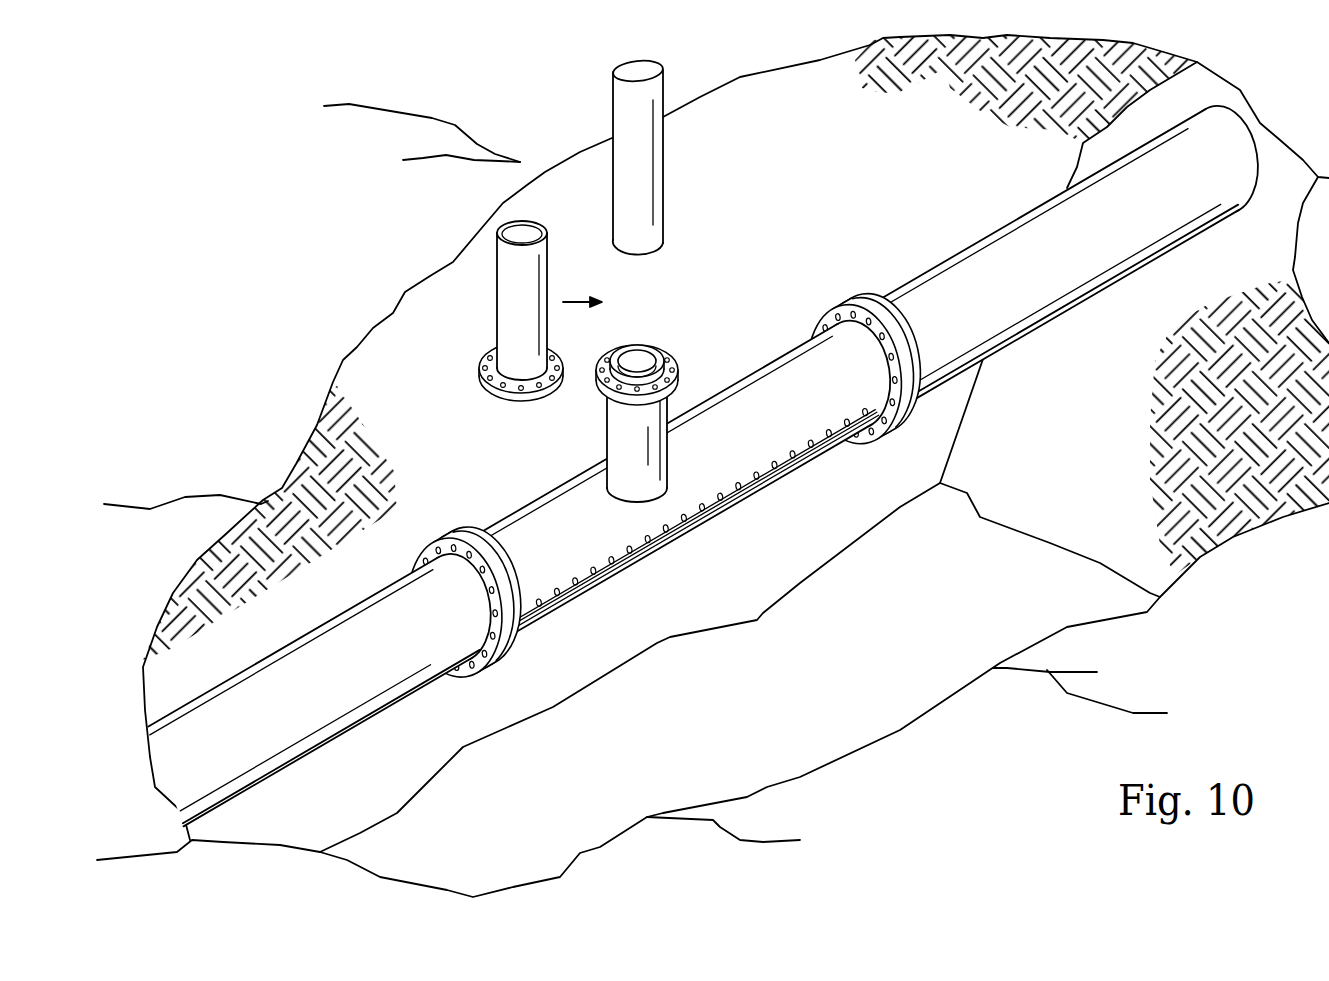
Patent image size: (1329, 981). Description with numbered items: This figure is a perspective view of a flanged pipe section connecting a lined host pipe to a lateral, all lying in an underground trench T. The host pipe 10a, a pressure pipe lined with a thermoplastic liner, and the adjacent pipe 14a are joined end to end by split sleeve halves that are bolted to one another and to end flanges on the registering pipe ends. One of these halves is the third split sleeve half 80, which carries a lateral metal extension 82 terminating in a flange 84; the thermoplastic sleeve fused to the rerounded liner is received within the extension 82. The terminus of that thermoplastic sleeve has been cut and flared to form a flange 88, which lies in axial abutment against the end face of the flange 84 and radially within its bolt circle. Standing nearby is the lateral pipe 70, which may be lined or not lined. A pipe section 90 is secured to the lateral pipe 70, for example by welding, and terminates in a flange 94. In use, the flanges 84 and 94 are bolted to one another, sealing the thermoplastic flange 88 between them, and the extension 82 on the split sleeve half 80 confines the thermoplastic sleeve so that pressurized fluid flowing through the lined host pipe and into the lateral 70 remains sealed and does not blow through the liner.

The trench T is at (945, 68).
The host pipe 10a is at (243, 726).
The adjacent pipe 14a is at (1016, 281).
The third split sleeve half 80 is at (547, 493).
The lateral metal extension 82 is at (610, 427).
The flange 84 is at (677, 367).
The flange 88 is at (647, 350).
The pipe section 90 is at (498, 308).
The flange 94 is at (490, 380).
The lateral pipe 70 is at (647, 178).